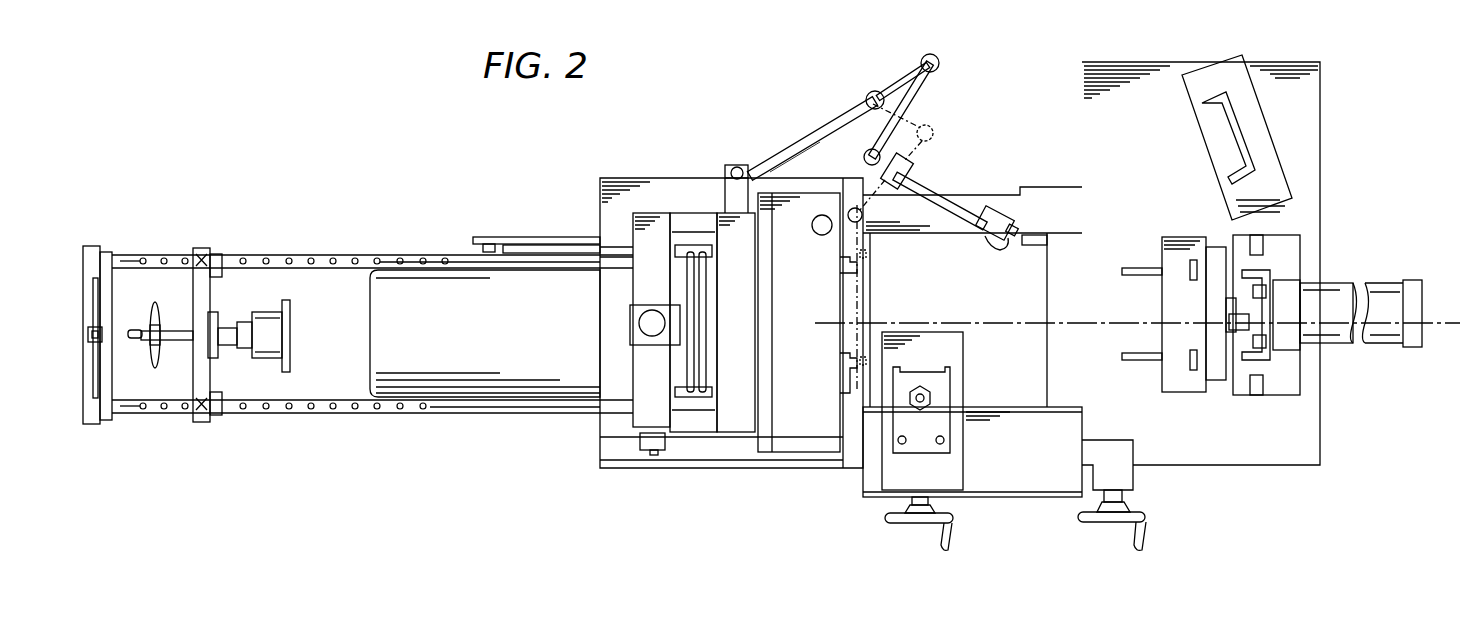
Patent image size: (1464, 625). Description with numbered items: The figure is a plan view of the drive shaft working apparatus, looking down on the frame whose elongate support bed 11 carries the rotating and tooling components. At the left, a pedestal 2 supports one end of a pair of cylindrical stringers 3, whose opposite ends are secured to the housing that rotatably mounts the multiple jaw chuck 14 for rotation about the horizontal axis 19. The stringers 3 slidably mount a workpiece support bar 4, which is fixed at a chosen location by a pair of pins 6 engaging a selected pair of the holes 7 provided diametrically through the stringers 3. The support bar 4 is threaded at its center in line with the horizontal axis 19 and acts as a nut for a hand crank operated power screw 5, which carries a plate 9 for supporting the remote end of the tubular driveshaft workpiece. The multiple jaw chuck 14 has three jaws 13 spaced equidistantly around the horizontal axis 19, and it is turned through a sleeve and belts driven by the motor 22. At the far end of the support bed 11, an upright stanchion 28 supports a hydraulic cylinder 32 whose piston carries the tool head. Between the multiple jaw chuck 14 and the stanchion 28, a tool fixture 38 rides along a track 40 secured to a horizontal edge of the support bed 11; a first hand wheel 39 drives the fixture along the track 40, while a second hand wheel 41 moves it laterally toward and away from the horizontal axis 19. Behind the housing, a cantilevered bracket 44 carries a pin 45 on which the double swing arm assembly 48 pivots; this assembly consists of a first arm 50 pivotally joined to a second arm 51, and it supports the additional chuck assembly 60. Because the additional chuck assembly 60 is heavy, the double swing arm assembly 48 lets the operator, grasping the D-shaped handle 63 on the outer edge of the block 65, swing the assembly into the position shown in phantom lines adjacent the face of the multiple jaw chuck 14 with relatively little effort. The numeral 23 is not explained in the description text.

The pedestal 2 is at (95, 258).
The cylindrical stringers 3 is at (348, 256).
The workpiece support bar 4 is at (205, 290).
The hand crank operated power screw 5 is at (180, 325).
The pins 6 is at (205, 258).
The holes 7 is at (423, 258).
The plate 9 is at (290, 325).
The elongate support bed 11 is at (1056, 228).
The jaws 13 is at (840, 266).
The multiple jaw chuck 14 is at (820, 440).
The horizontal axis 19 is at (1024, 320).
The motor 22 is at (494, 334).
The support column 23 is at (640, 442).
The upright stanchion 28 is at (1285, 280).
The hydraulic cylinder 32 is at (1392, 345).
The tool fixture 38 is at (898, 465).
The first hand wheel 39 is at (1117, 522).
The track 40 is at (1040, 466).
The second hand wheel 41 is at (916, 522).
The bracket 44 is at (778, 160).
The pin 45 is at (866, 97).
The double swing arm assembly 48 is at (948, 76).
The first arm 50 is at (921, 66).
The second arm 51 is at (920, 100).
The additional chuck assembly 60 is at (932, 185).
The D-shaped handle 63 is at (1005, 245).
The block 65 is at (990, 238).